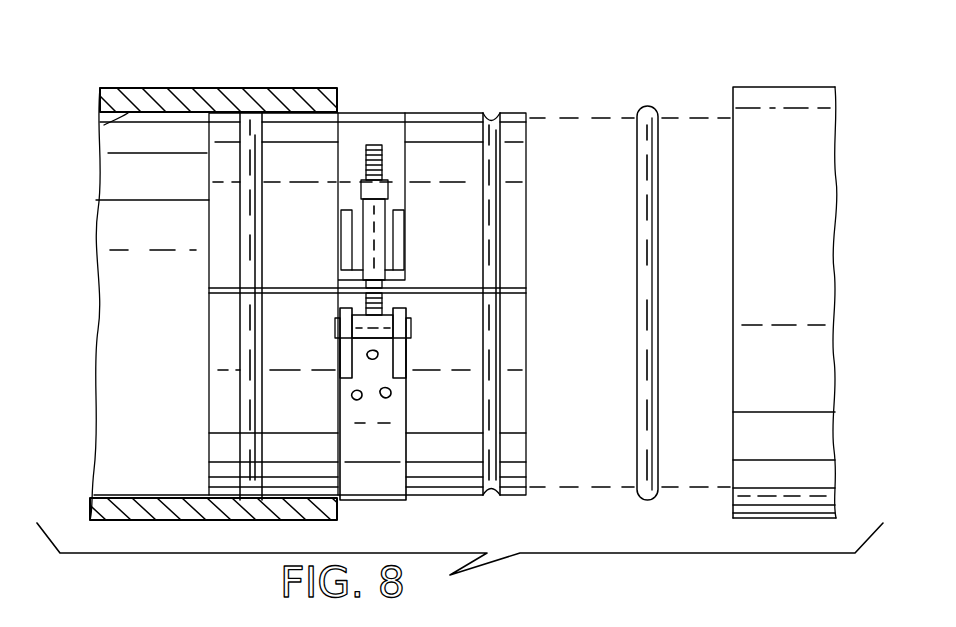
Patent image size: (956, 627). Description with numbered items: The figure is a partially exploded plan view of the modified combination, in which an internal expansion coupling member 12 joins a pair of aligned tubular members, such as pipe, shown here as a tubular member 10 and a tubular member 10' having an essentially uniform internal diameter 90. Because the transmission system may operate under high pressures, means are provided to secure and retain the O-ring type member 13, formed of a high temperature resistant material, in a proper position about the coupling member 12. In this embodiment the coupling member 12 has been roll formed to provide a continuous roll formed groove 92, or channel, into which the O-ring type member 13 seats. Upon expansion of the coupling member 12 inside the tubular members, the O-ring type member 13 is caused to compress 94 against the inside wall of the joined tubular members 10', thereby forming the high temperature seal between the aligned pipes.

The tubular member 10 is at (785, 262).
The tubular member 10' is at (219, 260).
The internal expansion coupling member 12 is at (436, 112).
The O-ring type member 13 is at (646, 106).
The essentially uniform internal diameter 90 is at (130, 113).
The roll formed groove 92 is at (490, 112).
The compression of the O-ring type member 94 is at (251, 112).